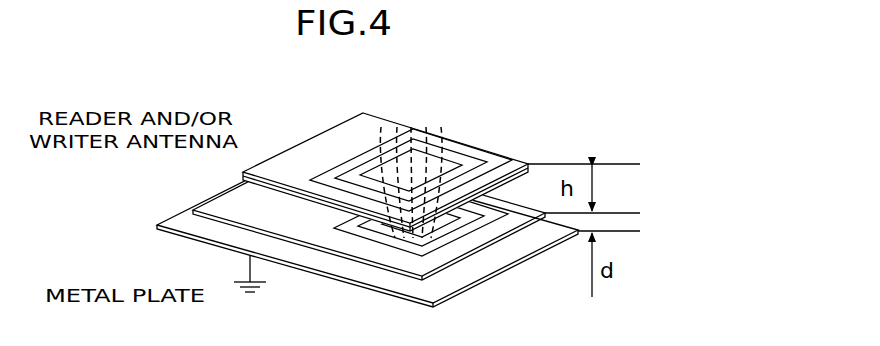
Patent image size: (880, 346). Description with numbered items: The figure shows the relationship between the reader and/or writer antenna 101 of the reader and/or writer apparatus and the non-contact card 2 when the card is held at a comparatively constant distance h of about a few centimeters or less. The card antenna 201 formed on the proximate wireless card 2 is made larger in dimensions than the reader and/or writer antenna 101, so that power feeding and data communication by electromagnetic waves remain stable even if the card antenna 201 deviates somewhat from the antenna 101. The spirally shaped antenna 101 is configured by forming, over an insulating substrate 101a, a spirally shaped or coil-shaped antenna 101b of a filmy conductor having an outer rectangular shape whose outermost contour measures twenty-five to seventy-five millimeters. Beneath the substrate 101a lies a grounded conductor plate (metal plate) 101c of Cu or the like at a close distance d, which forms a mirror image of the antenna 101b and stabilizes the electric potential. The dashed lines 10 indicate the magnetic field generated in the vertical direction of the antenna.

The non-contact card 2 is at (380, 116).
The magnetic flux 10 is at (438, 125).
The card antenna 201 is at (490, 150).
The reader and/or writer antenna 101 is at (210, 187).
The insulating substrate 101a is at (455, 265).
The spirally shaped or coil-shaped antenna 101b is at (377, 255).
The conductor plate (metal plate) 101c is at (212, 245).